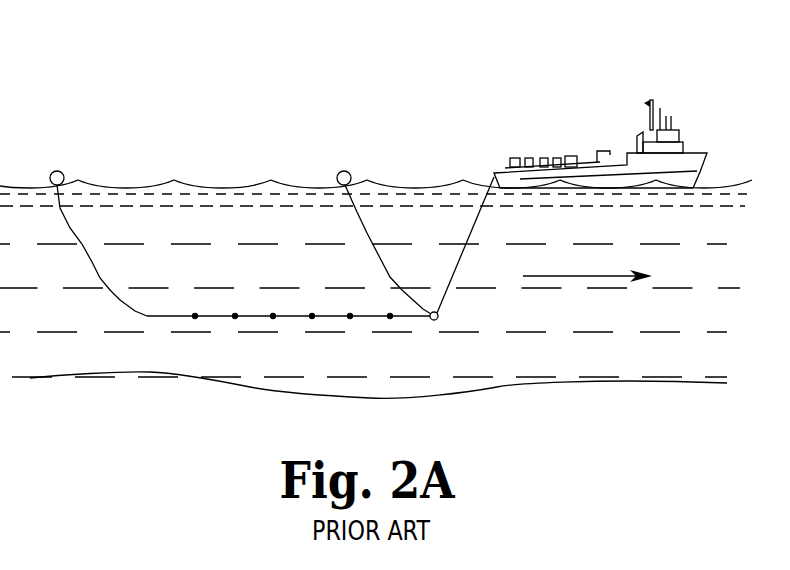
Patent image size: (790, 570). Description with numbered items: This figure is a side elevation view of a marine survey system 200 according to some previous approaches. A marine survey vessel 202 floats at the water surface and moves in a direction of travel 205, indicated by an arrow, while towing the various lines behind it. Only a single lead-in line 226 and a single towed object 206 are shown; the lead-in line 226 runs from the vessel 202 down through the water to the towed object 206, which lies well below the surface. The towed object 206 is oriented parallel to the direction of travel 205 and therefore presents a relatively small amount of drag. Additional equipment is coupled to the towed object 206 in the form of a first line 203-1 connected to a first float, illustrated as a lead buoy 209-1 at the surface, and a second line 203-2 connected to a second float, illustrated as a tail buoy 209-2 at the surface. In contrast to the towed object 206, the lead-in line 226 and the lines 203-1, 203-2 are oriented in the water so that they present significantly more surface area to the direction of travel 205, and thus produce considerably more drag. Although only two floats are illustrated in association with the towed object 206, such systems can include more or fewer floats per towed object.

The marine survey system 200 is at (174, 65).
The marine survey vessel 202 is at (700, 152).
The first line 203-1 is at (366, 224).
The second line 203-2 is at (95, 265).
The direction of travel 205 is at (601, 279).
The towed object 206 is at (257, 320).
The lead buoy 209-1 is at (344, 170).
The tail buoy 209-2 is at (57, 170).
The lead-in line 226 is at (478, 222).